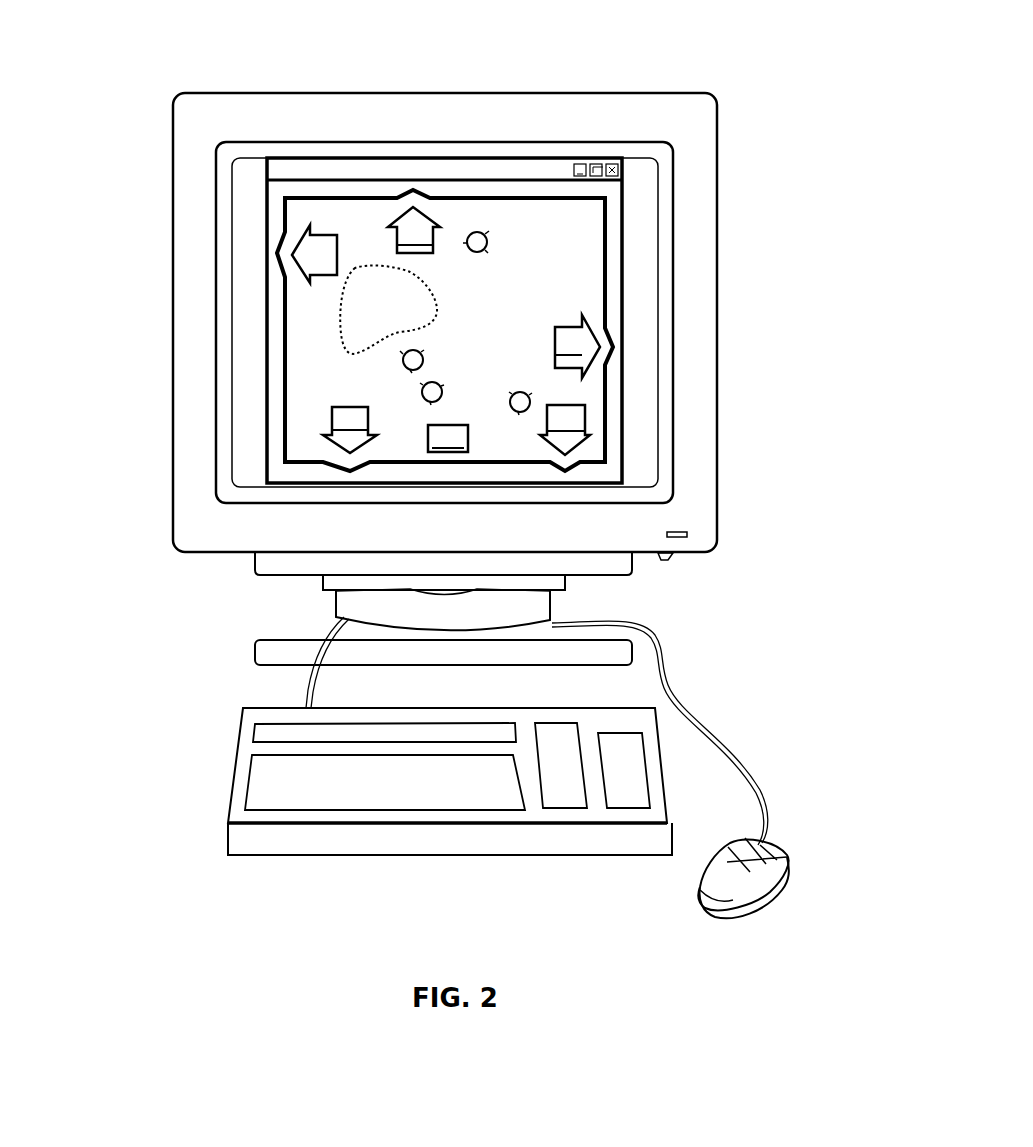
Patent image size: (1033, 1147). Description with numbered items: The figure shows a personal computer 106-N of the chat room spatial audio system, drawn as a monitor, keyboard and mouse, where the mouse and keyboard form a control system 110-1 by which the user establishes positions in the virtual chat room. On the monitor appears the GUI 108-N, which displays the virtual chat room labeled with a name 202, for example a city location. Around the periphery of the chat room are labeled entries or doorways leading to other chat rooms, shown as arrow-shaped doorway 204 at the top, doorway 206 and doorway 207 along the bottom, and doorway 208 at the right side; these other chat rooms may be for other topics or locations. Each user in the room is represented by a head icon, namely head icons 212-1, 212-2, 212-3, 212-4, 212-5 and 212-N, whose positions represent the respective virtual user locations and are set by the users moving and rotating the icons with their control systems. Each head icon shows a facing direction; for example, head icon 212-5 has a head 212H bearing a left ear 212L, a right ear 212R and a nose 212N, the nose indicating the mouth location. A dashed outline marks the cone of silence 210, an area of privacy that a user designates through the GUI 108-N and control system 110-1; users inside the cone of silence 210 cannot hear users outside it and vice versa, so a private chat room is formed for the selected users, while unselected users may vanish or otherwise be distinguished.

The personal computer 106-N is at (735, 108).
The graphical user interface (GUI) 108-N is at (632, 432).
The control system 110-1 is at (700, 887).
The name 202 is at (448, 438).
The doorway 204 is at (414, 230).
The doorway 206 is at (350, 430).
The doorway 207 is at (565, 430).
The doorway 208 is at (577, 346).
The cone of silence 210 is at (352, 268).
The head icon 212-1 is at (340, 291).
The head icon 212-2 is at (325, 330).
The head icon 212-3 is at (383, 363).
The head icon 212-4 is at (400, 395).
The head icon 212-5 is at (648, 156).
The head icon 212-N is at (540, 401).
The head 212H is at (473, 232).
The left ear 212L is at (483, 232).
The nose 212N is at (486, 252).
The right ear 212R is at (467, 247).